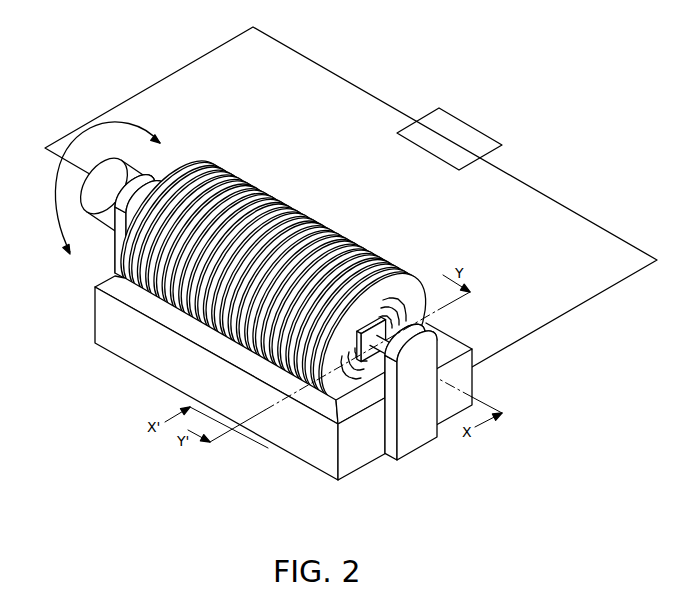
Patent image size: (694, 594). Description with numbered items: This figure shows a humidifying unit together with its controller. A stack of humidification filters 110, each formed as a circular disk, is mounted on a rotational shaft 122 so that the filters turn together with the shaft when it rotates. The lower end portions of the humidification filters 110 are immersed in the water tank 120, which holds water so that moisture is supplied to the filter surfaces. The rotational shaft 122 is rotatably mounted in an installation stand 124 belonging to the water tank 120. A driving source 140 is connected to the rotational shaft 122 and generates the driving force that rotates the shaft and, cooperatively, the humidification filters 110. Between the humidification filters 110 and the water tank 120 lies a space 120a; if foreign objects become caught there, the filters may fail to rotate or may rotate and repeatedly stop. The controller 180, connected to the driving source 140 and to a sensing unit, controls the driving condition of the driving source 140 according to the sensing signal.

The humidification filters 110 is at (403, 286).
The water tank 120 is at (283, 430).
The space 120a is at (116, 285).
The rotational shaft 122 is at (390, 347).
The installation stand 124 is at (416, 442).
The driving source 140 is at (98, 204).
The controller 180 is at (454, 135).